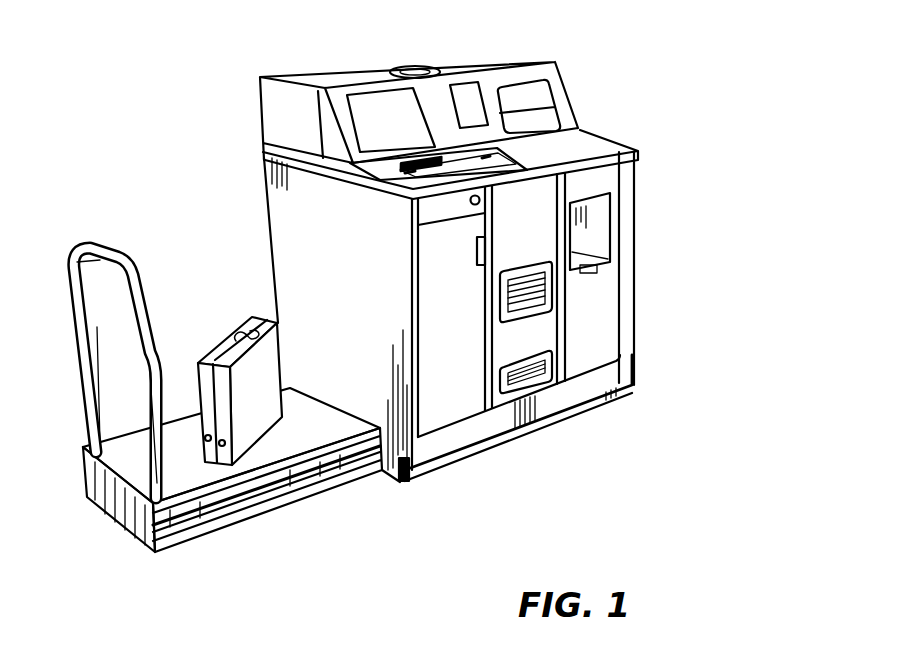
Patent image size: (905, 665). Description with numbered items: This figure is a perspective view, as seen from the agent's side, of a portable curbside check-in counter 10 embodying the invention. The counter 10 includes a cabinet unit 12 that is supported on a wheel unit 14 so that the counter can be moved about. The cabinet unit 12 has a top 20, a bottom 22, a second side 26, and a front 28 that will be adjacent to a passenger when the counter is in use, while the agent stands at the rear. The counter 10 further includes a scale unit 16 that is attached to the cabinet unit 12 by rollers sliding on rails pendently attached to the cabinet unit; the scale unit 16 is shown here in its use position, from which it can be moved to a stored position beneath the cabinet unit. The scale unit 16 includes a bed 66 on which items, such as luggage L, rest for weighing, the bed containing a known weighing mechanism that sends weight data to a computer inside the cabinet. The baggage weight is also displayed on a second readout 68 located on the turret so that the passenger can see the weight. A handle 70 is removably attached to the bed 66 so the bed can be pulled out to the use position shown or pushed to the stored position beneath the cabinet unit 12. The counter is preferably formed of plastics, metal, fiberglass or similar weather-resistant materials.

The curbside check-in counter 10 is at (653, 126).
The cabinet unit 12 is at (300, 203).
The wheel unit 14 is at (412, 472).
The scale unit 16 is at (250, 531).
The top 20 is at (590, 147).
The bottom 22 is at (535, 402).
The second side 26 is at (283, 240).
The front 28 is at (260, 112).
The bed 66 is at (178, 475).
The second readout 68 is at (410, 70).
The handle 70 is at (80, 250).
The luggage L is at (258, 428).